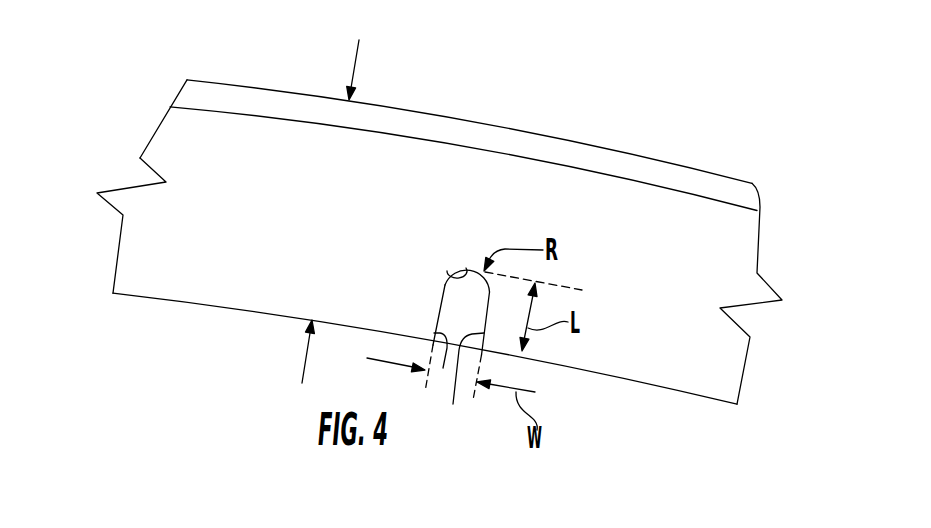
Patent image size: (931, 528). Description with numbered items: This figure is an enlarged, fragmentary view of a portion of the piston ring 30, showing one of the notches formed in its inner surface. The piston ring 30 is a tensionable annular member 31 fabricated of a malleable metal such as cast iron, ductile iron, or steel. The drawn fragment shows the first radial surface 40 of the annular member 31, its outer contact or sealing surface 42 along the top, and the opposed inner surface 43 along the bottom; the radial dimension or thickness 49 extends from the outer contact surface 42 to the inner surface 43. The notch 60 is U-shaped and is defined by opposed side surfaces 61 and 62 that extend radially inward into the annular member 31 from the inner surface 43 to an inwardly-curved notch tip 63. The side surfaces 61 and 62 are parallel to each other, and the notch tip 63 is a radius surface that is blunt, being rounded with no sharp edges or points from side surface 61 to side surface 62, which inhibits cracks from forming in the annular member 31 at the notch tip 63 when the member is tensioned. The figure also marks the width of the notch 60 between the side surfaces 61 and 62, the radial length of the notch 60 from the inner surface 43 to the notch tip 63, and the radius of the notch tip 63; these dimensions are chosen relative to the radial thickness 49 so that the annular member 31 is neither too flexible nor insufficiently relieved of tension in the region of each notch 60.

The piston ring 30 is at (633, 152).
The annular member 31 is at (154, 134).
The first radial surface 40 is at (158, 247).
The outer contact or sealing surface 42 is at (226, 84).
The inner surface 43 is at (237, 310).
The radial dimension or thickness 49 is at (356, 58).
The notch 60 is at (464, 314).
The side surface 61 is at (443, 366).
The side surface 62 is at (463, 386).
The notch tip 63 is at (447, 271).